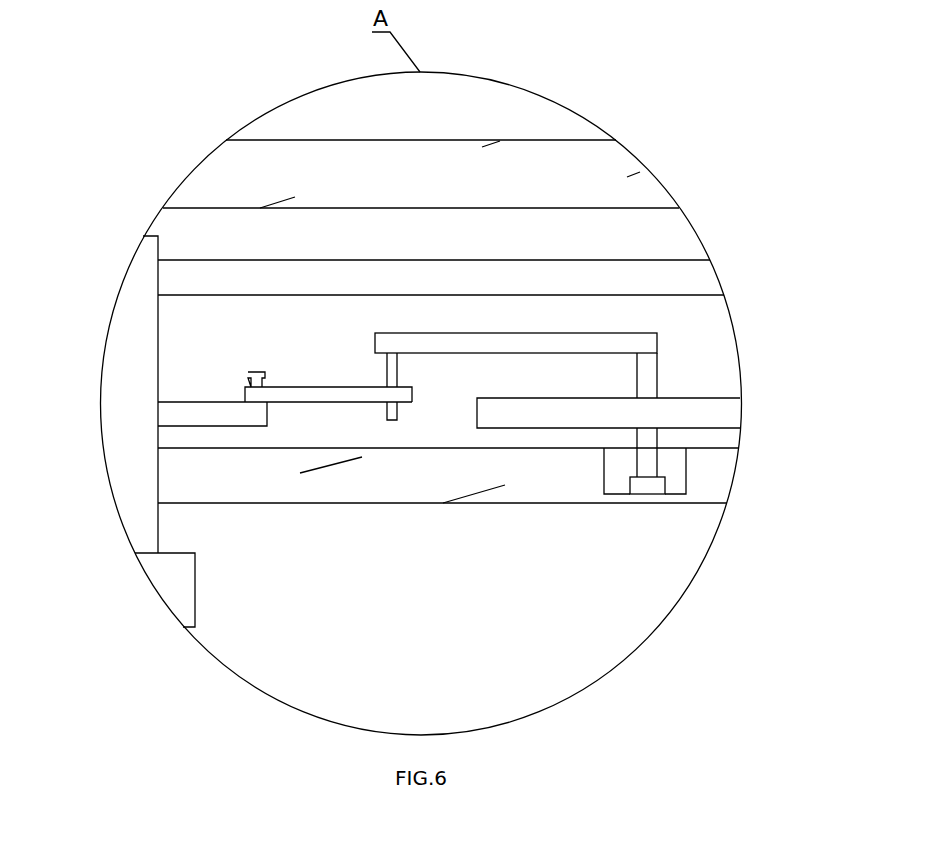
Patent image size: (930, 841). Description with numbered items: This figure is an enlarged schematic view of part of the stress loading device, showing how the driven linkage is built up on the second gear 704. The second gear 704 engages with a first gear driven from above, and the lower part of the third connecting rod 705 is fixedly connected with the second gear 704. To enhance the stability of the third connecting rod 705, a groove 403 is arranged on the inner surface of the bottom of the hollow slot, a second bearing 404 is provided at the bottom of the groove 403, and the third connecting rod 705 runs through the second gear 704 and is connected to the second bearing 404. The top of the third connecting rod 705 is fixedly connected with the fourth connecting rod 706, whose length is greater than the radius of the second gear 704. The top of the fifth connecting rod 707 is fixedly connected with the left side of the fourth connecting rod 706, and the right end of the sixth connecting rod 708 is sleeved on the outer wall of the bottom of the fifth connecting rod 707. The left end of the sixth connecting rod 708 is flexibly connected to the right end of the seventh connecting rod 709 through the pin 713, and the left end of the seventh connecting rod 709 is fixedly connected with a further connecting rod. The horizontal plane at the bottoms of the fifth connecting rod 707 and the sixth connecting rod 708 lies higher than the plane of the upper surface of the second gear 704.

The groove 403 is at (688, 473).
The second bearing 404 is at (653, 488).
The second gear 704 is at (693, 397).
The third connecting rod 705 is at (637, 378).
The fourth connecting rod 706 is at (517, 333).
The fifth connecting rod 707 is at (387, 372).
The sixth connecting rod 708 is at (313, 402).
The seventh connecting rod 709 is at (227, 425).
The pin 713 is at (250, 378).